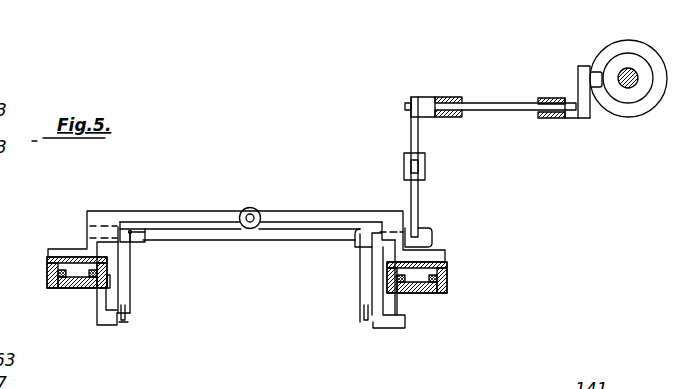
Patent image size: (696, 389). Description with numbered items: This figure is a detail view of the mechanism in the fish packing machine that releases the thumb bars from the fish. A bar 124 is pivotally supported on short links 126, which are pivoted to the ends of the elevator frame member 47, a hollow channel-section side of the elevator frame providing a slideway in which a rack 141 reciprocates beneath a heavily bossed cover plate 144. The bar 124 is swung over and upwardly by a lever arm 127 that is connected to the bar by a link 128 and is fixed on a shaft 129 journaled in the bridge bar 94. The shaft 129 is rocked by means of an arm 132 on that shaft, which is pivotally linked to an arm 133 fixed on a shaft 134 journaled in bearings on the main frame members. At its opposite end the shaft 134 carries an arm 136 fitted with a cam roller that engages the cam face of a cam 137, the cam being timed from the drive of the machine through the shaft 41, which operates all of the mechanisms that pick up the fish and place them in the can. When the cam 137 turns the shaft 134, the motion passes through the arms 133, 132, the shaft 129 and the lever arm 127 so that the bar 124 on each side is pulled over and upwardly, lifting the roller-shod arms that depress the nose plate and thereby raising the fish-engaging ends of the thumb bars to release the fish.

The shaft 41 is at (627, 68).
The elevator frame side 47 is at (60, 282).
The bridge bar 94 is at (182, 216).
The bar 124 is at (112, 328).
The links 126 is at (100, 306).
The lever arm 127 is at (131, 283).
The link 128 is at (124, 321).
The shaft 129 is at (184, 235).
The arm 132 is at (413, 201).
The arm 133 is at (413, 143).
The shaft 134 is at (498, 107).
The arm 136 is at (577, 73).
The cam 137 is at (623, 107).
The rack 141 is at (90, 291).
The cover plate 144 is at (55, 250).